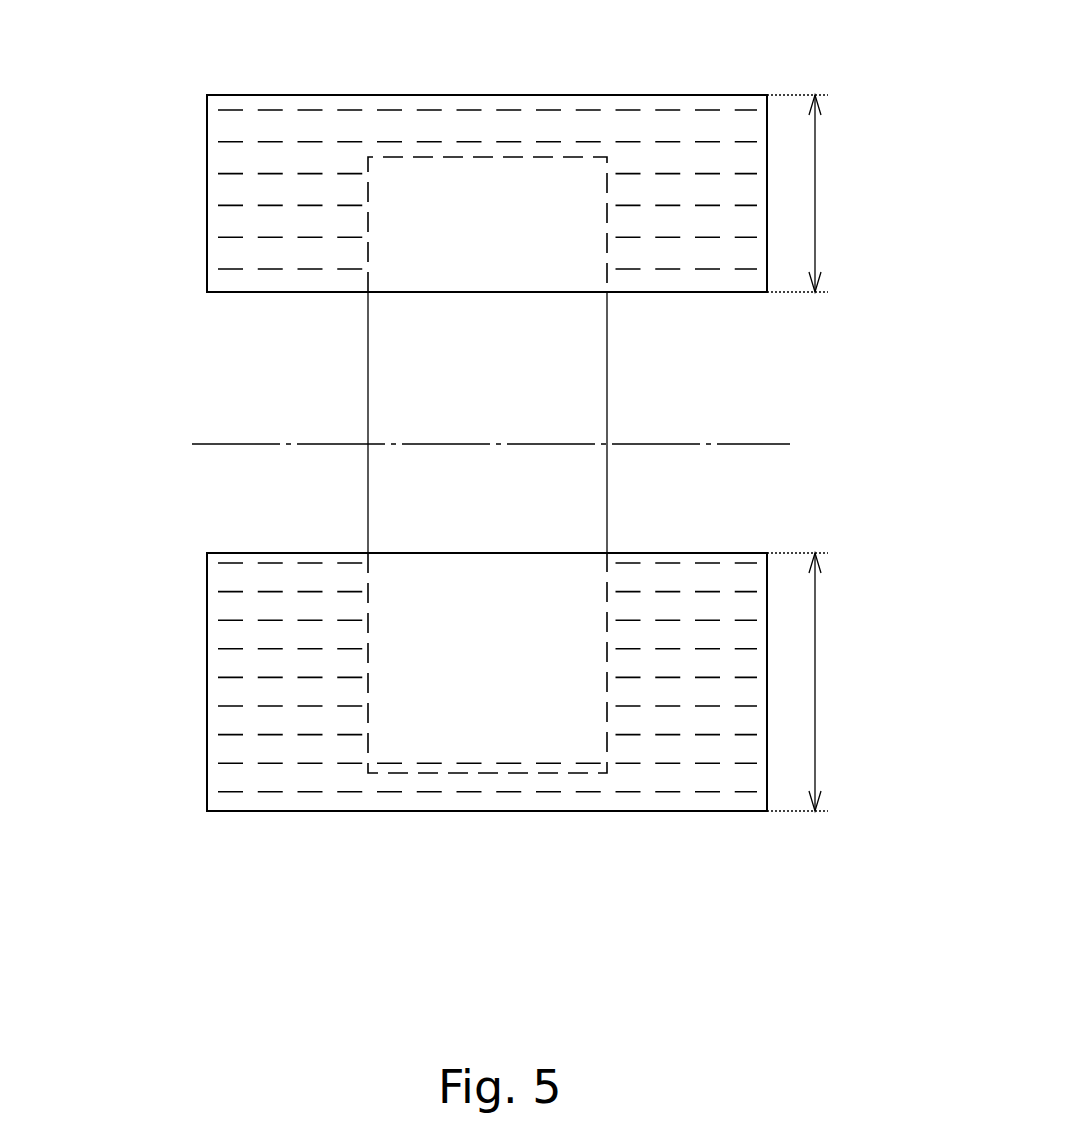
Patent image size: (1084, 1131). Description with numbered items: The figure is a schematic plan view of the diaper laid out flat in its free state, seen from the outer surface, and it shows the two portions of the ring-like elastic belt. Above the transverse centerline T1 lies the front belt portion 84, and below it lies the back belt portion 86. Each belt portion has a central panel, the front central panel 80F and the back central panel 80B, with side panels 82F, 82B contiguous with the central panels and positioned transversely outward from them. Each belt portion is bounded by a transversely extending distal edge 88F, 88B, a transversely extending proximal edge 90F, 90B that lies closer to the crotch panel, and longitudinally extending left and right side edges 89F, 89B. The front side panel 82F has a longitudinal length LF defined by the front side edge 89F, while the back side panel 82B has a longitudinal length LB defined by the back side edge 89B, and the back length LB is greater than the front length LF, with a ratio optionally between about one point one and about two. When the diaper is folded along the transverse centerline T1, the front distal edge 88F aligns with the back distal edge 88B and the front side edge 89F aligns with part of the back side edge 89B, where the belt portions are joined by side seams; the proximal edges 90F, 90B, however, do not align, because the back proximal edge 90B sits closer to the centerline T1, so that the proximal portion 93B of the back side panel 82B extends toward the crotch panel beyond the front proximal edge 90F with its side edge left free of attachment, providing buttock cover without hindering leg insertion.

The front central panel 80F is at (482, 193).
The back central panel 80B is at (467, 730).
The front side panel 82F is at (650, 232).
The back side panel 82B is at (688, 605).
The front belt portion 84 is at (336, 95).
The back belt portion 86 is at (318, 811).
The front distal edge 88F is at (577, 95).
The back distal edge 88B is at (584, 811).
The front side edge 89F is at (768, 125).
The back side edge 89B is at (207, 688).
The front proximal edge 90F is at (532, 292).
The back proximal edge 90B is at (552, 553).
The proximal portion 93B is at (207, 578).
The longitudinal length LF is at (815, 190).
The longitudinal length LB is at (815, 680).
The transverse centerline T1 is at (757, 444).